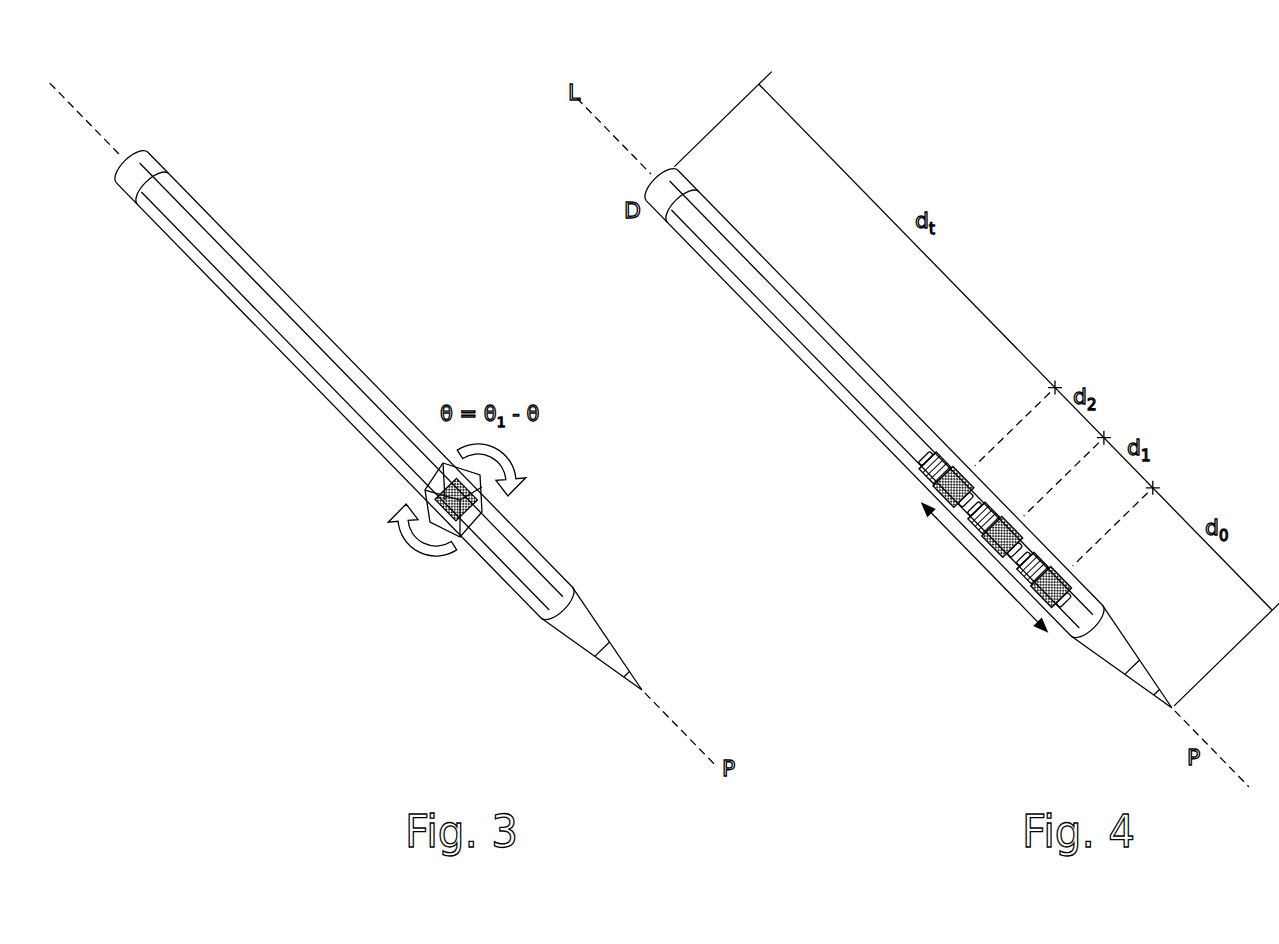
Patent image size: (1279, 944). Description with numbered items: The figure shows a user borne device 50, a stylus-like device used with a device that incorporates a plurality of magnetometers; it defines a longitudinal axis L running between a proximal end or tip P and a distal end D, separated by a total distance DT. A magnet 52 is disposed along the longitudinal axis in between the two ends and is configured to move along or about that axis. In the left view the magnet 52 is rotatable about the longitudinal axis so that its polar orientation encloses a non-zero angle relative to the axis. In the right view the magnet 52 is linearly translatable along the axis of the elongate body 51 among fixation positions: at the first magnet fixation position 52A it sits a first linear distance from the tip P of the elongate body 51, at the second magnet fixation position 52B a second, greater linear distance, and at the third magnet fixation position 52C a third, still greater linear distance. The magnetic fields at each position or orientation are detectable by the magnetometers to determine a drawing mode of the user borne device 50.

In FIG. 3, the user borne device 50 is at (318, 397).
In FIG. 4, the user borne device 50 is at (778, 342).
In FIG. 3, the elongate body 51 is at (640, 693).
In FIG. 4, the elongate body 51 is at (1171, 710).
In FIG. 3, the magnet 52 is at (428, 503).
In FIG. 4, the first magnet fixation position 52A is at (1030, 592).
In FIG. 4, the second magnet fixation position 52B is at (977, 537).
In FIG. 4, the third magnet fixation position 52C is at (922, 484).